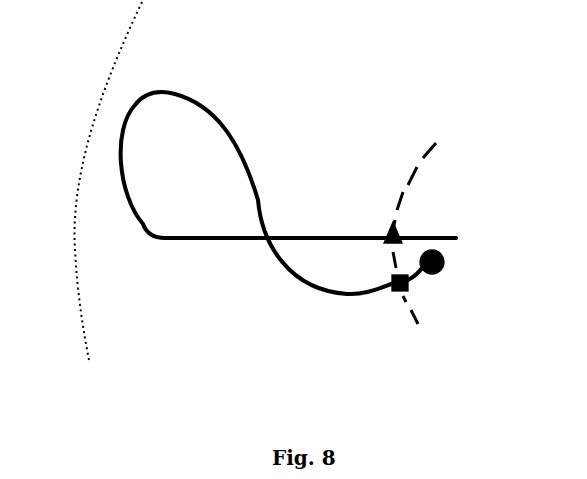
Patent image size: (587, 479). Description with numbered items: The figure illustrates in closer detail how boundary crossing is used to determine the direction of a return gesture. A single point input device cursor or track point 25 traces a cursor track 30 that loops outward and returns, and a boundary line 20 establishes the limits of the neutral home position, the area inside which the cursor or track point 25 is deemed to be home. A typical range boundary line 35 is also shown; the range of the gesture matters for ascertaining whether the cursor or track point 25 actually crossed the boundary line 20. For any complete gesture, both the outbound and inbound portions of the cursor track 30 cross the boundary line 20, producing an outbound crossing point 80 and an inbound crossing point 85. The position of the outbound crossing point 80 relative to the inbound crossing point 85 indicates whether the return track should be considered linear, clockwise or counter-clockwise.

The typical range boundary line 35 is at (92, 117).
The cursor track 30 is at (237, 147).
The boundary line 20 is at (430, 142).
The outbound crossing point 80 is at (393, 222).
The inbound crossing point 85 is at (399, 298).
The single point input device cursor or track point 25 is at (436, 274).